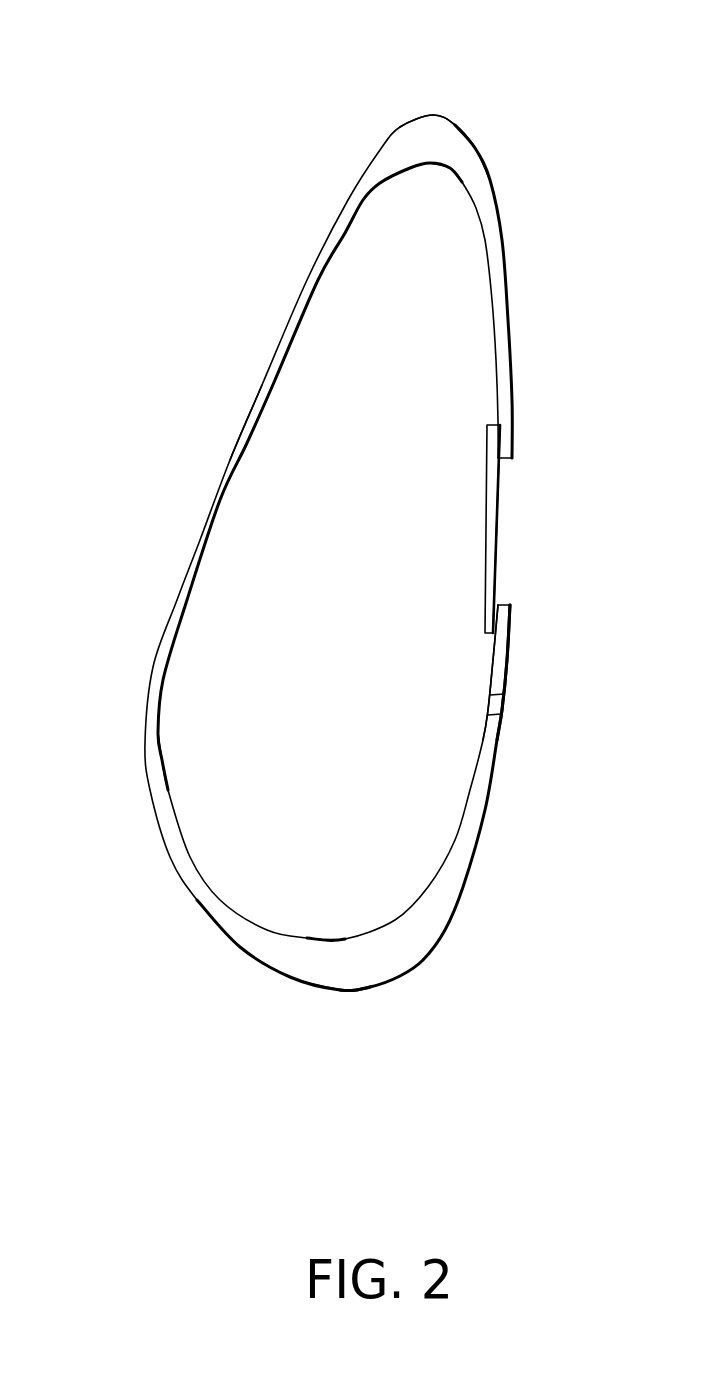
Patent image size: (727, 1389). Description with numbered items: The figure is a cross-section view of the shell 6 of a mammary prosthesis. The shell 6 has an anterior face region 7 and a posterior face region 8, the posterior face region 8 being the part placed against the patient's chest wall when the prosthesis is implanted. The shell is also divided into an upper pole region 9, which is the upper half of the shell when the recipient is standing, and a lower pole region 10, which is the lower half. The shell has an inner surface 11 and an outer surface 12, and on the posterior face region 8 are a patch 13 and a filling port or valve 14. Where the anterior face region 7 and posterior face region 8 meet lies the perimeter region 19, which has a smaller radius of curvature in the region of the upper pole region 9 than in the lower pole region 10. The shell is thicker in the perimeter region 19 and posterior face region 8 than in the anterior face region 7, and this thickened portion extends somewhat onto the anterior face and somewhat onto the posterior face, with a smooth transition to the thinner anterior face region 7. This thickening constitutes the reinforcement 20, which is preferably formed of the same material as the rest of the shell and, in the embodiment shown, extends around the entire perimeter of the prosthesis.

The shell 6 is at (336, 546).
The anterior face region 7 is at (247, 424).
The posterior face region 8 is at (512, 398).
The upper pole region 9 is at (314, 429).
The lower pole region 10 is at (324, 688).
The inner surface 11 is at (428, 887).
The outer surface 12 is at (483, 815).
The patch 13 is at (500, 530).
The filling port or valve 14 is at (503, 708).
The perimeter region 19 is at (478, 108).
The reinforcement 20 is at (426, 132).